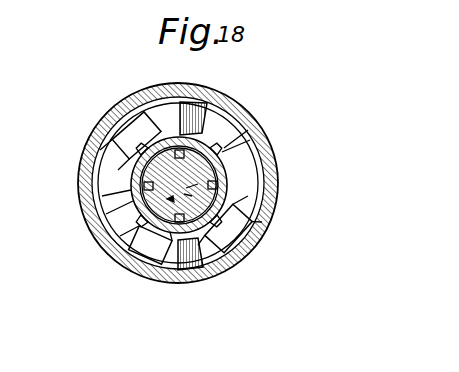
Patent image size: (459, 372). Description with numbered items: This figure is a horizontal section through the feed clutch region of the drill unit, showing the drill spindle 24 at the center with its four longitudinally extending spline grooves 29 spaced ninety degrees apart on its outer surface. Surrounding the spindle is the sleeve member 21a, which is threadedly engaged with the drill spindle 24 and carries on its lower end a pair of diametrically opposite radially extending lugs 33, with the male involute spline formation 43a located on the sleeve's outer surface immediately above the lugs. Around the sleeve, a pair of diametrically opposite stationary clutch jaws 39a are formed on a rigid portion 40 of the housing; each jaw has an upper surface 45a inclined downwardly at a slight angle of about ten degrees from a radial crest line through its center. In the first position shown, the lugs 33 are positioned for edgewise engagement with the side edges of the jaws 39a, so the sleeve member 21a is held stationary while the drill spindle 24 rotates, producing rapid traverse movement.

The sleeve member 21a is at (226, 160).
The drill spindle 24 is at (225, 205).
The spline grooves 29 is at (95, 208).
The lugs 33 is at (120, 148).
The stationary clutch jaws 39a is at (128, 246).
The rigid portion of the housing 40 is at (232, 172).
The external involute spline formation 43a is at (138, 148).
The inclined upper surfaces 45a is at (134, 102).